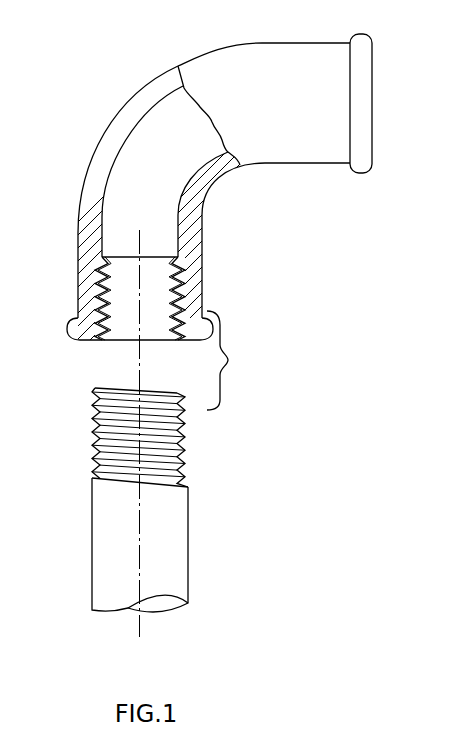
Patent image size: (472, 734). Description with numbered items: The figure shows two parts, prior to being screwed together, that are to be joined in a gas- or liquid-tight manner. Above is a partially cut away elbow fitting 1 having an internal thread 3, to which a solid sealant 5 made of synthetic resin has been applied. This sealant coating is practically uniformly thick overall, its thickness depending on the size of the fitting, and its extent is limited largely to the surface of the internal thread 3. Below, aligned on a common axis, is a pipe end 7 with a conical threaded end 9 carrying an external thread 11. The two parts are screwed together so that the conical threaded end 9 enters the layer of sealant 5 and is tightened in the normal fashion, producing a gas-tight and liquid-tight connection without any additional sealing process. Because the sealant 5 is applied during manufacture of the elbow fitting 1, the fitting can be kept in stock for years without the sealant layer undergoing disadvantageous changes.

The elbow fitting 1 is at (123, 45).
The internal thread 3 is at (187, 288).
The solid sealant 5 is at (94, 295).
The pipe end 7 is at (177, 538).
The conical threaded end 9 is at (160, 430).
The external thread 11 is at (181, 458).